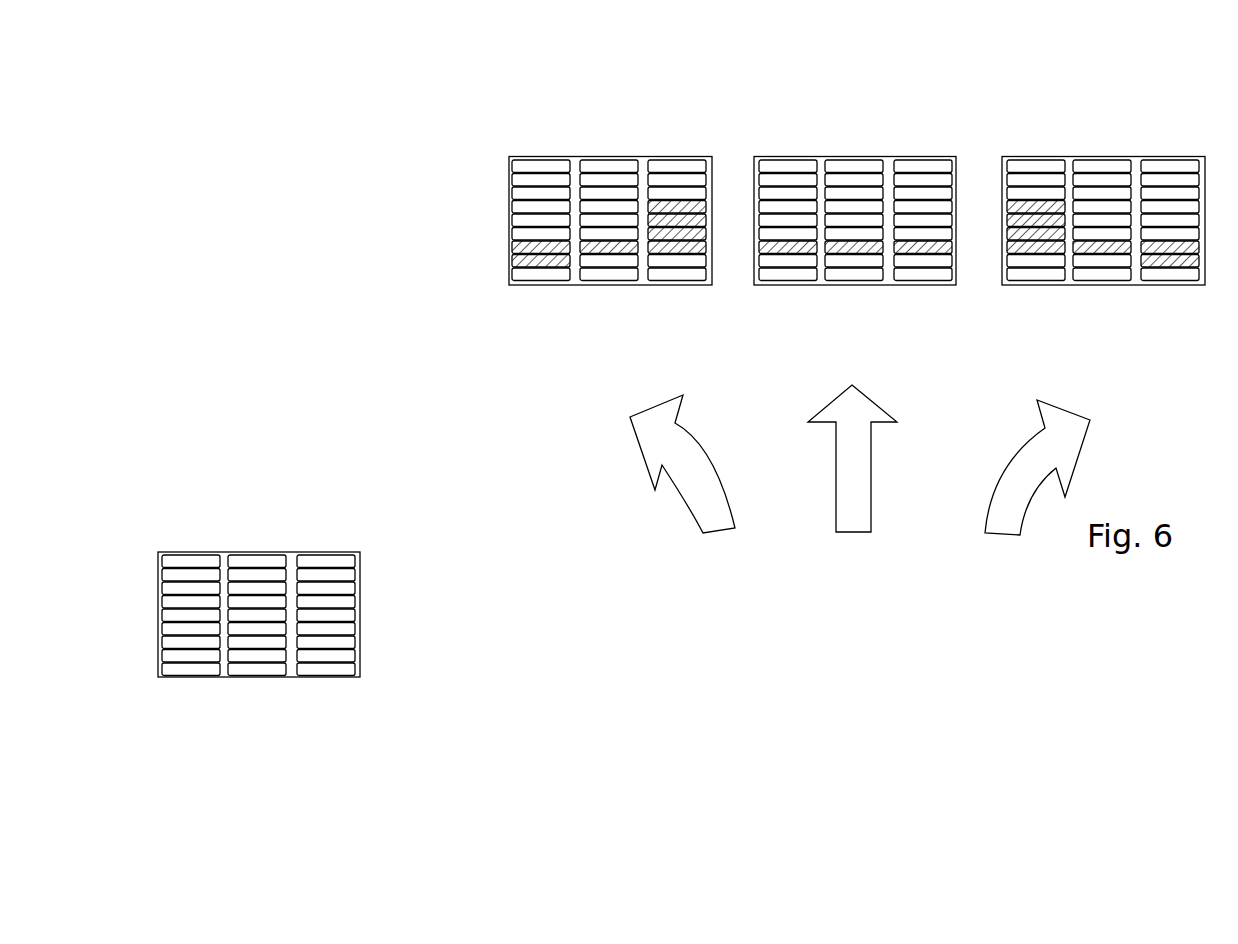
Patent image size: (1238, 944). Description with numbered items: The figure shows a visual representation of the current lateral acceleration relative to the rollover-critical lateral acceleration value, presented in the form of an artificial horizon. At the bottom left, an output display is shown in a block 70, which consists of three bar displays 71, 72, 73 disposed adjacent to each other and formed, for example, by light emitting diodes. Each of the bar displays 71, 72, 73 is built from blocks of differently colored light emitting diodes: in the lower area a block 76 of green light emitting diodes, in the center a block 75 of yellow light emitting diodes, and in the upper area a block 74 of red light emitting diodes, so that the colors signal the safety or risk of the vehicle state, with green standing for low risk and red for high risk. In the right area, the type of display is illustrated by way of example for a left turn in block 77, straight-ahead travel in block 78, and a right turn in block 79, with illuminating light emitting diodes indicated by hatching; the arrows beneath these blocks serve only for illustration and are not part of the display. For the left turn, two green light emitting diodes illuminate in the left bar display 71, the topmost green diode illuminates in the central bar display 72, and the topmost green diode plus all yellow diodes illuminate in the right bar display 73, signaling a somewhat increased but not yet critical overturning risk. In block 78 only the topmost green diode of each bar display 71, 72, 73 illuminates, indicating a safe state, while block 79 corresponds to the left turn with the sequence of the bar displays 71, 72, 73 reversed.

The block 70 is at (234, 593).
The bar display 71 is at (183, 695).
The bar display 72 is at (258, 695).
The bar display 73 is at (330, 695).
The block of red light emitting diodes 74 is at (152, 558).
The block of yellow light emitting diodes 75 is at (152, 598).
The block of green light emitting diodes 76 is at (152, 637).
The block 77 is at (608, 142).
The block 78 is at (843, 145).
The block 79 is at (1107, 145).